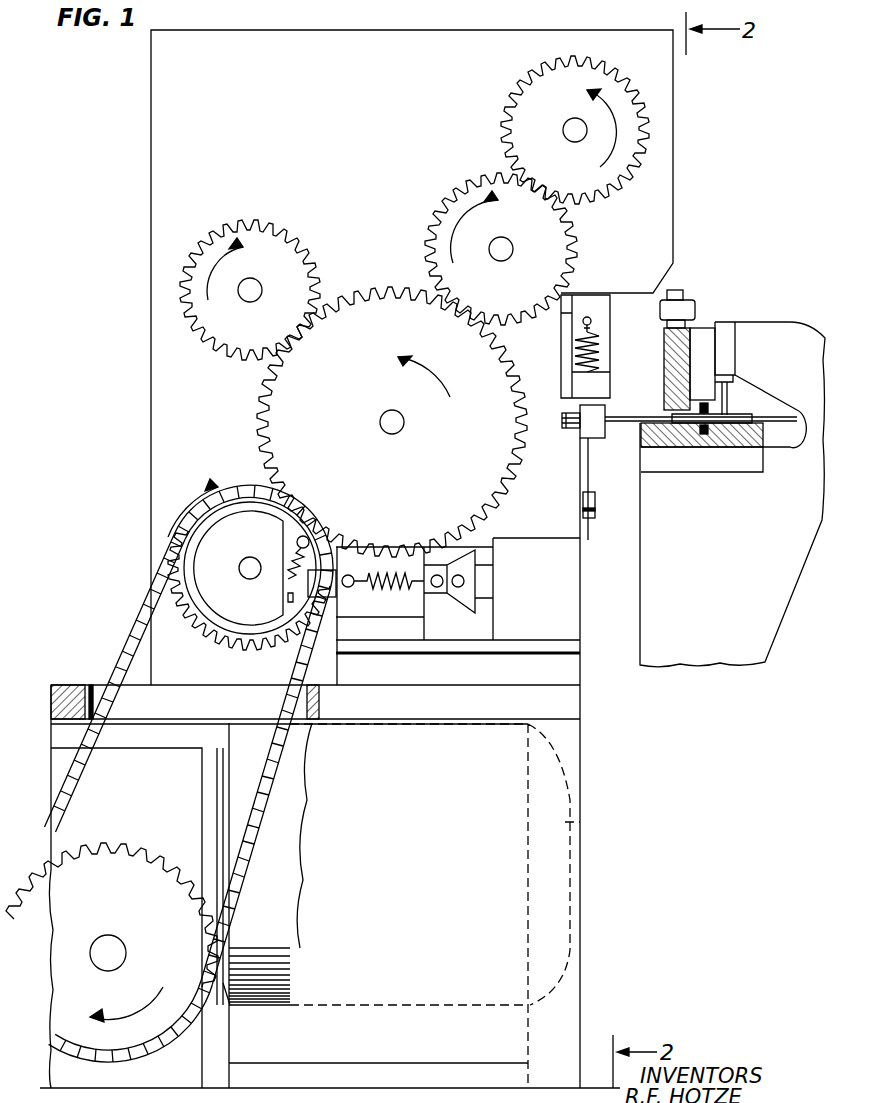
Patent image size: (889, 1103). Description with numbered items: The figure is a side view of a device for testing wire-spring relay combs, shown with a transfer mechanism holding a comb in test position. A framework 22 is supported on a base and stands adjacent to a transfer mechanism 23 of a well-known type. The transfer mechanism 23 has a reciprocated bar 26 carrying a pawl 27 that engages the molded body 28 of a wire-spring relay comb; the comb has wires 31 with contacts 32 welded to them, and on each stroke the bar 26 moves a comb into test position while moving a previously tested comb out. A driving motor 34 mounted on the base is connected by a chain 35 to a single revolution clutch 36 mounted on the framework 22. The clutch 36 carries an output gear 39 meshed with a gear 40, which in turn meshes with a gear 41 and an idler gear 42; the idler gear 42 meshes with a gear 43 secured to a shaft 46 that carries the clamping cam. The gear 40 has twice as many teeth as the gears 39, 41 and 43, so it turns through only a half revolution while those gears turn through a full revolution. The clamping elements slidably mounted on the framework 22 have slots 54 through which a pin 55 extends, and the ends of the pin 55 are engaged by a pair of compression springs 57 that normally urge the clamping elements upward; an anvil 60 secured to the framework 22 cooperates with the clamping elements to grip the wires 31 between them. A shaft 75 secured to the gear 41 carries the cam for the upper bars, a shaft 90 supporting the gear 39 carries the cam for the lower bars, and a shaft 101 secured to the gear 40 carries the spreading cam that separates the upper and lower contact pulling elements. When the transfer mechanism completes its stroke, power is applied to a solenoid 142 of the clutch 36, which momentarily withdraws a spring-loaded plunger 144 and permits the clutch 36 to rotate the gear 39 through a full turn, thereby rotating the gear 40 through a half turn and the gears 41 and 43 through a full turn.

The framework 22 is at (563, 737).
The transfer mechanism 23 is at (648, 466).
The reciprocated bar 26 is at (671, 361).
The pawl 27 is at (690, 398).
The molded body 28 is at (737, 410).
The wires 31 is at (607, 418).
The contacts 32 is at (568, 428).
The driving motor 34 is at (243, 768).
The chain 35 is at (128, 640).
The single revolution clutch 36 is at (232, 506).
The output gear 39 is at (255, 651).
The gear 40 is at (262, 415).
The gear 41 is at (288, 235).
The idler gear 42 is at (577, 247).
The gear 43 is at (610, 76).
The shaft 46 is at (566, 138).
The slots 54 is at (591, 321).
The pin 55 is at (593, 329).
The compression springs 57 is at (601, 352).
The anvil 60 is at (586, 473).
The shaft 75 is at (254, 301).
The shaft 90 is at (247, 574).
The shaft 101 is at (380, 424).
The solenoid 142 is at (530, 547).
The spring-loaded plunger 144 is at (318, 578).